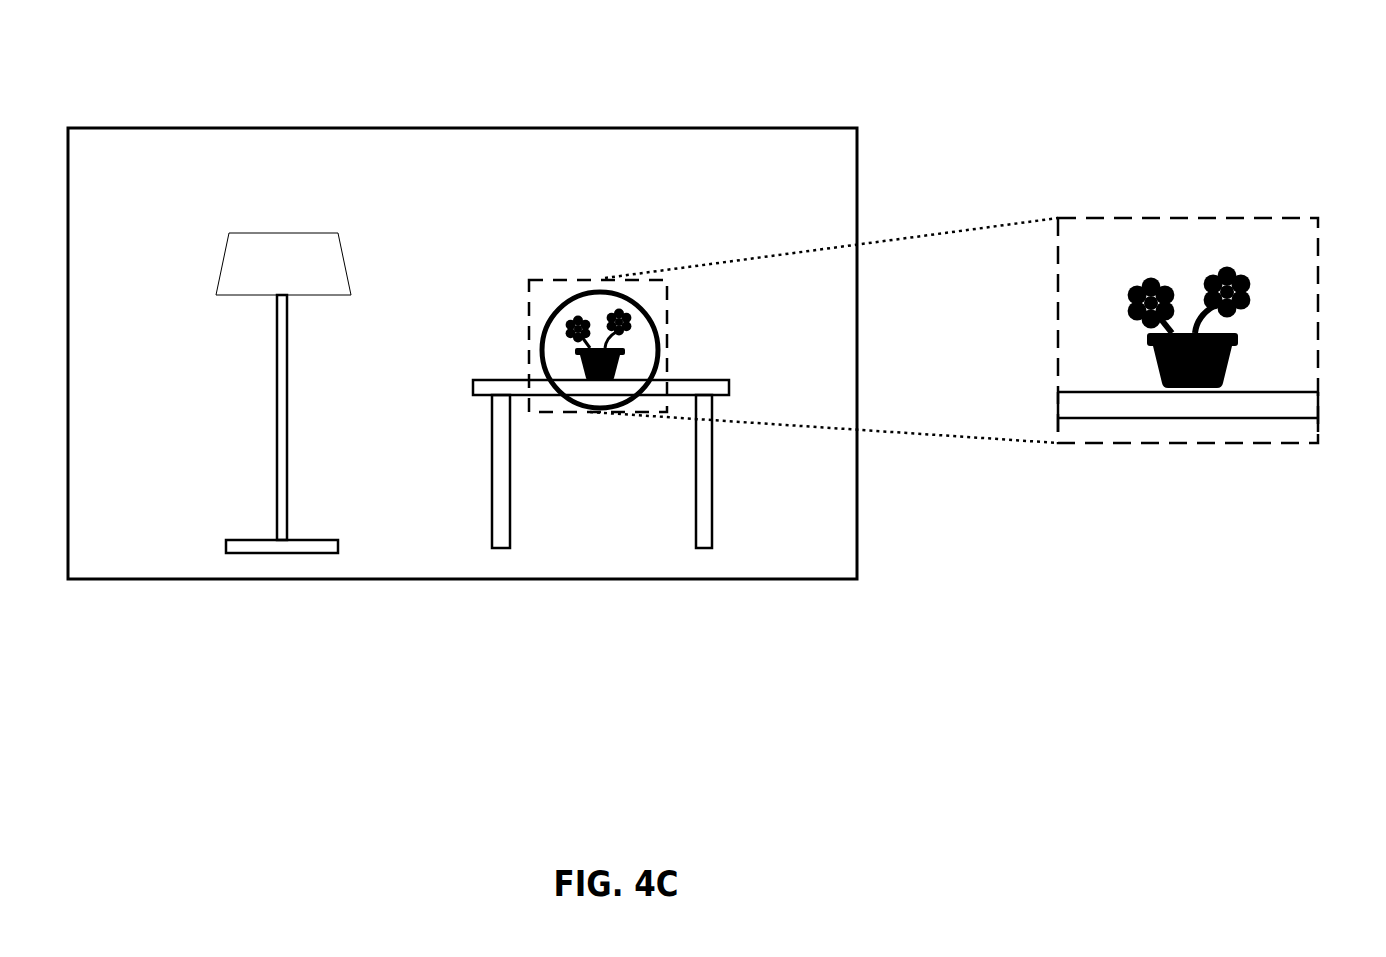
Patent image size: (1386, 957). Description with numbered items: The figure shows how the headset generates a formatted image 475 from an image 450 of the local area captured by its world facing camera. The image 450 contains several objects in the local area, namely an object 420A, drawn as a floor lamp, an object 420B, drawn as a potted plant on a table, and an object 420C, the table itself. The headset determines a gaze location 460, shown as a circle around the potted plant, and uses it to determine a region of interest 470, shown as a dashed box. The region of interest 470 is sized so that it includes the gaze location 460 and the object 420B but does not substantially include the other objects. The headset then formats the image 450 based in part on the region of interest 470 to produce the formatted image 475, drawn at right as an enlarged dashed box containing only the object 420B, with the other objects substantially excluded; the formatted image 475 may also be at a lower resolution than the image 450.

The image 450 is at (715, 128).
The object 420A is at (236, 262).
The object 420B is at (573, 327).
The object 420C is at (498, 443).
The gaze location 460 is at (620, 296).
The region of interest (ROI) 470 is at (572, 277).
The formatted image 475 is at (1190, 217).